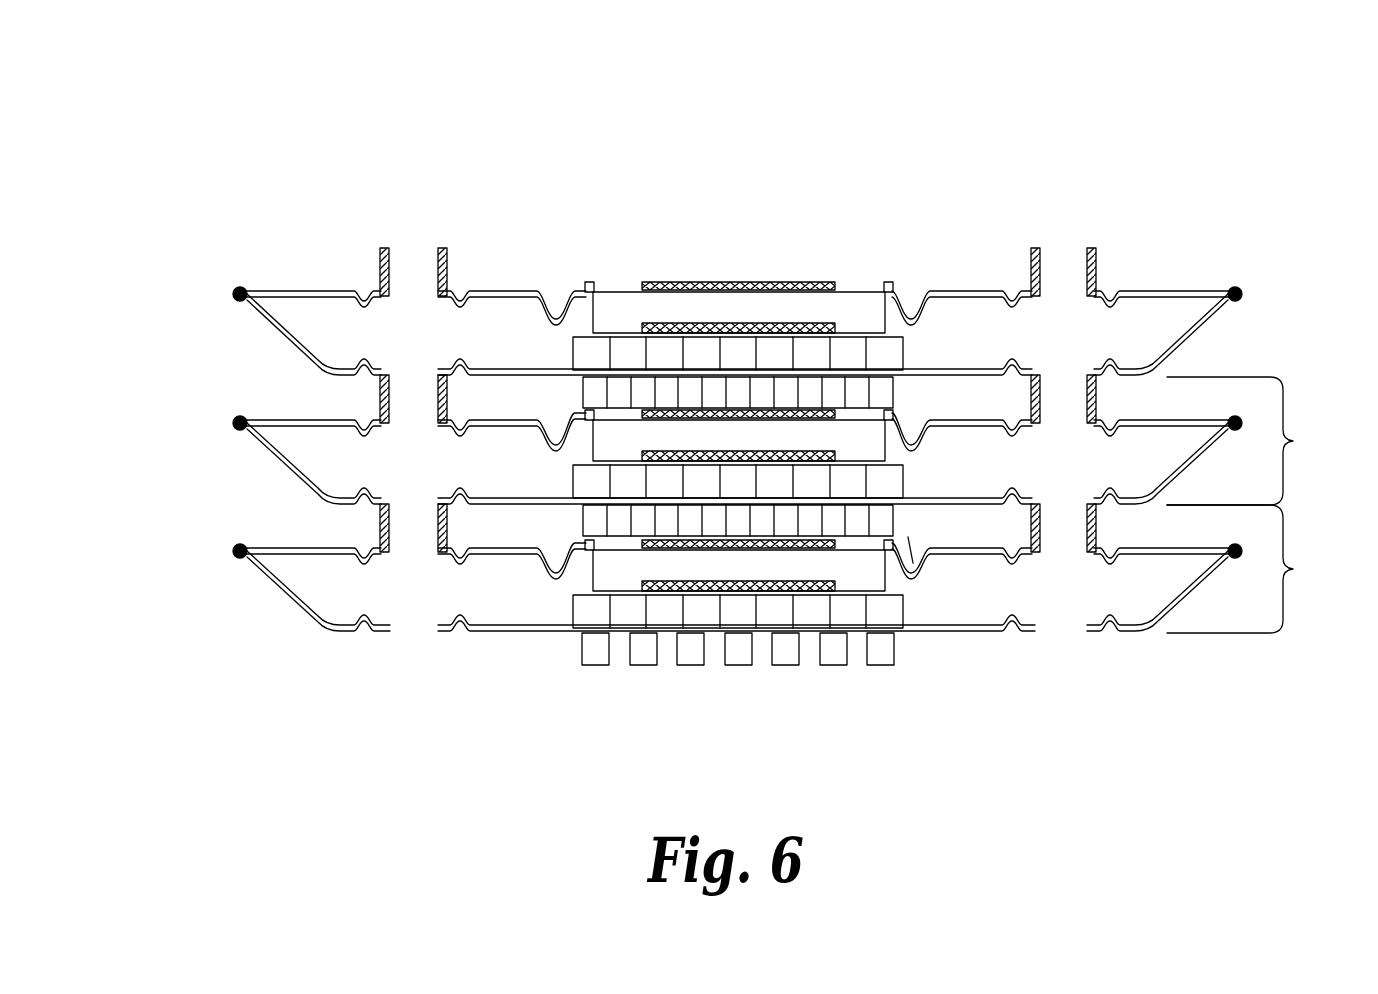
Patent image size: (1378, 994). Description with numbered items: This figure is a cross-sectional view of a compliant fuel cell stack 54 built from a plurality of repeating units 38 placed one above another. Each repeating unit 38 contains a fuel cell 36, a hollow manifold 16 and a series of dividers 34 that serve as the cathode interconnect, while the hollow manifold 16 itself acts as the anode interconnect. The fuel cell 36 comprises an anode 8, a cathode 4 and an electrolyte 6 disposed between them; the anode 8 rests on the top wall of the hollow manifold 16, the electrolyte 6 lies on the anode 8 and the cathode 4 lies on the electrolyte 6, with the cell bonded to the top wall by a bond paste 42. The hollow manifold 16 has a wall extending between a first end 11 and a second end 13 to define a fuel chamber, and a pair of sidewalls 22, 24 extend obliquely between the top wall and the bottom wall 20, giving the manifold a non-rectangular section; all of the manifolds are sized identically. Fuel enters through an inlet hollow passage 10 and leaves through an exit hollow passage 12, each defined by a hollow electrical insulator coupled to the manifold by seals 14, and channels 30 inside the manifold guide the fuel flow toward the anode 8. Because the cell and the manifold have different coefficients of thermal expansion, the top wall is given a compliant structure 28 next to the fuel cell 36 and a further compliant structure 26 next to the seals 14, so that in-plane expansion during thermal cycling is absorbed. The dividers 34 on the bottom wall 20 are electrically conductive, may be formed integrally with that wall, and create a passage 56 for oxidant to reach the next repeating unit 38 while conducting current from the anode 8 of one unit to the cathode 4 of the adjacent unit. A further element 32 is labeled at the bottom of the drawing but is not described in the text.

The compliant fuel cell stack 54 is at (198, 153).
The inlet hollow passage 10 is at (407, 262).
The seal 14 is at (383, 262).
The compliant structure 28 is at (567, 292).
The bond paste 42 is at (592, 283).
The cathode 4 is at (710, 283).
The anode 8 is at (837, 322).
The electrolyte 6 is at (868, 302).
The exit hollow passage 12 is at (1053, 267).
The hollow manifold 16 is at (975, 292).
The first end 11 is at (235, 294).
The second end 13 is at (1250, 292).
The sidewall 22 is at (283, 328).
The sidewall 24 is at (1200, 330).
The compliant structure 26 is at (458, 364).
The bottom wall 20 is at (548, 370).
The channels 30 is at (900, 352).
The dividers 34 is at (590, 395).
The bottom spacer 32 is at (738, 613).
The passage 56 is at (957, 530).
The fuel cell 36 is at (910, 567).
The repeating unit 38 is at (1254, 505).